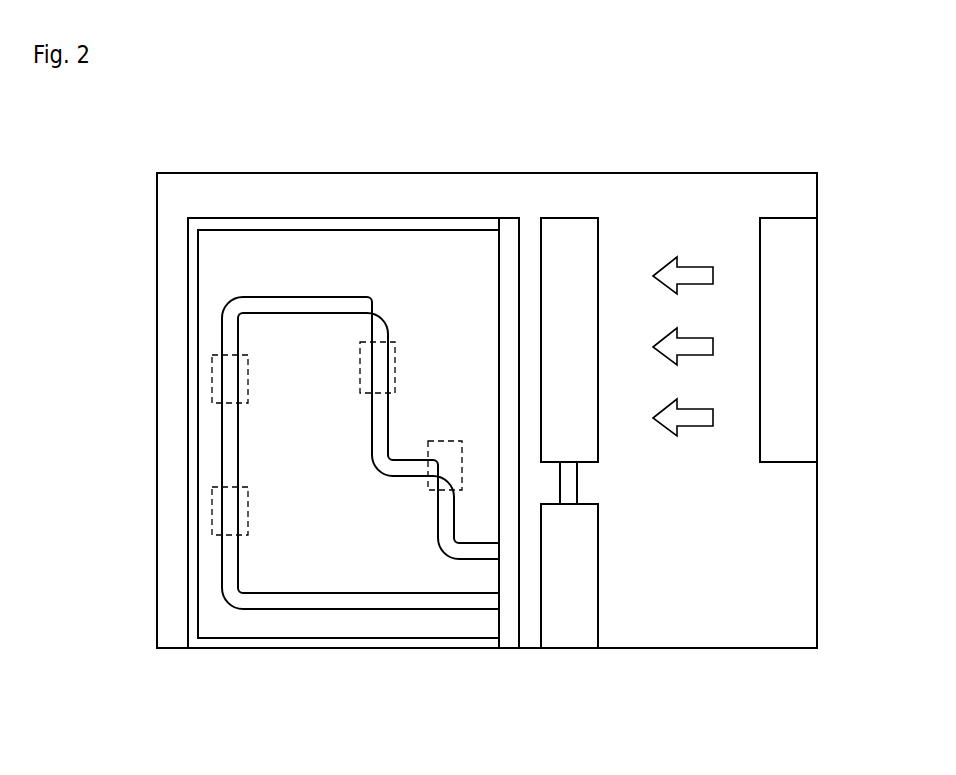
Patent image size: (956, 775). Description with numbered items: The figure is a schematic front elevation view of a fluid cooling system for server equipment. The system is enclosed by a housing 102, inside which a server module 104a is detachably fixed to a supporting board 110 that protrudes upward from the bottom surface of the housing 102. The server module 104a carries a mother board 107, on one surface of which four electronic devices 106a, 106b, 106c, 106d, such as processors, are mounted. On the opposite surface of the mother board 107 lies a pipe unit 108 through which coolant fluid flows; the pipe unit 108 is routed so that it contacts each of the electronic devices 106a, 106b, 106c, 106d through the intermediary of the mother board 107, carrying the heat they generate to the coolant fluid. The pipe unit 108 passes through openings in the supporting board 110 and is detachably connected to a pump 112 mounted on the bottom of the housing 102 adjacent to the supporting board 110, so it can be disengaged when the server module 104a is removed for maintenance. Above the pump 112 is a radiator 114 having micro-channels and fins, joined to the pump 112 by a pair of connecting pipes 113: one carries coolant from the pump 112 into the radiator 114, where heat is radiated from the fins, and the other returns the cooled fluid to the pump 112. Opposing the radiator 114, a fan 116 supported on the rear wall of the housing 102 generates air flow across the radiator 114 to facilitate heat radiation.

The housing 102 is at (230, 172).
The server module 104a is at (187, 545).
The electronic device 106a is at (247, 512).
The electronic device 106b is at (247, 380).
The electronic device 106c is at (443, 441).
The electronic device 106d is at (398, 352).
The mother board 107 is at (215, 628).
The pipe unit 108 is at (347, 600).
The supporting board 110 is at (513, 247).
The pump 112 is at (568, 627).
The connecting pipes 113 is at (568, 483).
The radiator 114 is at (568, 250).
The fan 116 is at (790, 257).